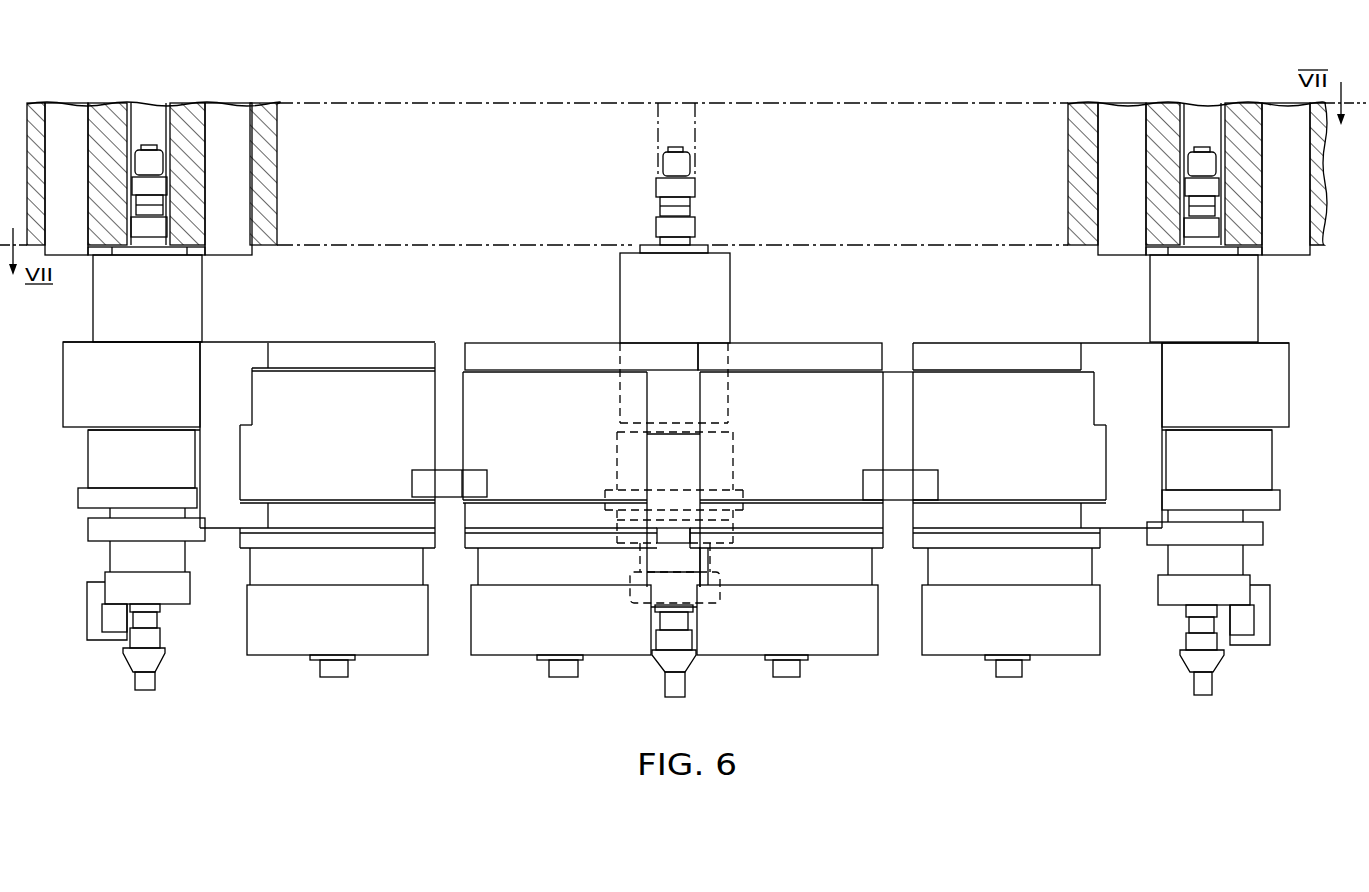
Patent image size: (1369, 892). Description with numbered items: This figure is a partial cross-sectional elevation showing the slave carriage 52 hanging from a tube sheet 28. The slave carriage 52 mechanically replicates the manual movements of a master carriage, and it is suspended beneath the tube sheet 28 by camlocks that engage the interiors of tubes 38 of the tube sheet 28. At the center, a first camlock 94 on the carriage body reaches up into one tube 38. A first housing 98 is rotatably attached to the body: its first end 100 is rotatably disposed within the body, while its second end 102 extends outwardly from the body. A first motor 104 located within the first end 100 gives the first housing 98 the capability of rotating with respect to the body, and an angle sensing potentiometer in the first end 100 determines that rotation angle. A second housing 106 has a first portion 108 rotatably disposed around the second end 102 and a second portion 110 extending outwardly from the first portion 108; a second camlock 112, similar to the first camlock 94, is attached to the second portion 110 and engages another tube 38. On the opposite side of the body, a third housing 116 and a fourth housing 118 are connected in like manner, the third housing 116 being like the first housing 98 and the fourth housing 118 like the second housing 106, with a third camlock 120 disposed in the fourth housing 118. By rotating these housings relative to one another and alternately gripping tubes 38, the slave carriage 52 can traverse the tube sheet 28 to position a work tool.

The tube sheet 28 is at (467, 196).
The tube 38 is at (248, 125).
The slave carriage 52 is at (236, 631).
The first camlock 94 is at (697, 198).
The first housing 98 is at (945, 392).
The first end 100 is at (809, 444).
The second end 102 is at (1006, 444).
The first motor 104 is at (840, 645).
The second housing 106 is at (1136, 355).
The first portion 108 is at (1035, 355).
The second portion 110 is at (1270, 410).
The second camlock 112 is at (1208, 217).
The third housing 116 is at (447, 360).
The fourth housing 118 is at (240, 357).
The third camlock 120 is at (145, 237).